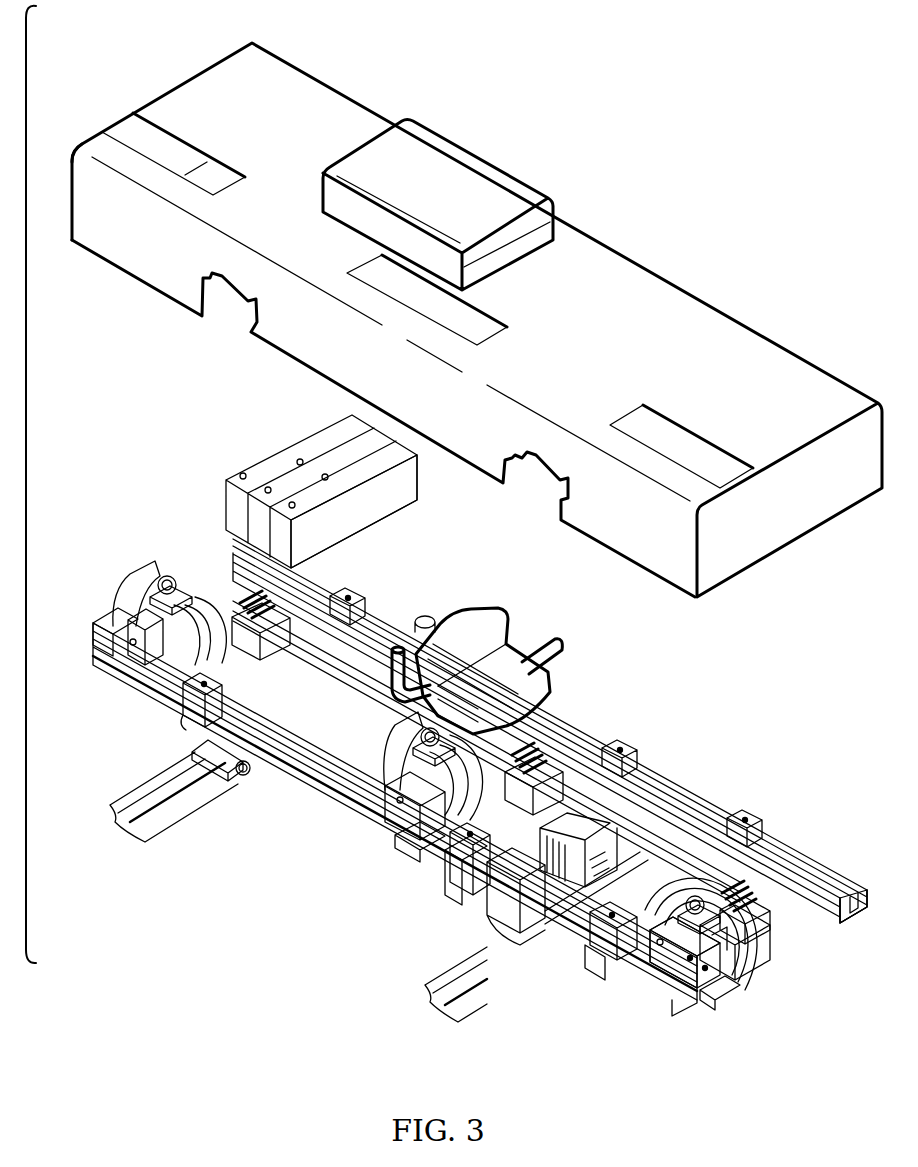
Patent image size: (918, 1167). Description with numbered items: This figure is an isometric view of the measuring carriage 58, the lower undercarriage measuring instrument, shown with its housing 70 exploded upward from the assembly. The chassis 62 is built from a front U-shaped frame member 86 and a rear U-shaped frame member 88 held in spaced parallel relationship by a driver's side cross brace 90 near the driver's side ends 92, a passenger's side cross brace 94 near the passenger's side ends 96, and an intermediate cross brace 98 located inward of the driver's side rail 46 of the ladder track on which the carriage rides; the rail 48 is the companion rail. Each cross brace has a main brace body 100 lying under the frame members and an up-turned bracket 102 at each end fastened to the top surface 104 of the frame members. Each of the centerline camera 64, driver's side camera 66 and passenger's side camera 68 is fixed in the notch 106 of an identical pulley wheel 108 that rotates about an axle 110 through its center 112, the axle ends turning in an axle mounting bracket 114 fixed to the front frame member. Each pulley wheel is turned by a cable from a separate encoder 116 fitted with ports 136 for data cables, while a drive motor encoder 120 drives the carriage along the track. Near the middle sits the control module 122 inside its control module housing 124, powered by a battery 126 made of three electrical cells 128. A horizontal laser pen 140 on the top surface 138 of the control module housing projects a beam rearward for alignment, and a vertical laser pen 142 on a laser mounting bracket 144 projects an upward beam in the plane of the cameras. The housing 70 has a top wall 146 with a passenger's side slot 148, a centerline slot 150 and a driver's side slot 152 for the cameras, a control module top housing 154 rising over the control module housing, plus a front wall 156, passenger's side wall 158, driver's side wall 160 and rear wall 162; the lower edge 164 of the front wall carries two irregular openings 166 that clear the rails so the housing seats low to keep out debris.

The driver's side rail 46 is at (430, 1003).
The rail 48 is at (115, 795).
The measuring carriage 58 is at (118, 463).
The chassis 62 is at (700, 795).
The centerline camera 64 is at (320, 775).
The driver's side camera 66 is at (727, 981).
The passenger's side camera 68 is at (448, 775).
The housing 70 is at (768, 345).
The front U-shaped frame member 86 is at (690, 990).
The rear U-shaped frame member 88 is at (675, 775).
The driver's side cross brace 90 is at (605, 985).
The driver's side ends 92 is at (858, 910).
The passenger's side cross brace 94 is at (185, 740).
The passenger's side ends 96 is at (232, 565).
The intermediate cross brace 98 is at (450, 895).
The main brace body 100 is at (490, 905).
The up-turned bracket 102 is at (355, 600).
The top surface 104 is at (255, 780).
The notch 106 is at (148, 598).
The pulley wheel 108 is at (115, 585).
The axle 110 is at (95, 635).
The center 112 is at (740, 960).
The axle mounting bracket 114 is at (120, 672).
The encoder 116 is at (303, 576).
The drive motor encoder 120 is at (598, 828).
The control module 122 is at (560, 650).
The control module housing 124 is at (425, 630).
The battery 126 is at (420, 478).
The electrical cells 128 is at (290, 468).
The ports 136 is at (250, 605).
The top surface 138 is at (471, 650).
The horizontal laser pen 140 is at (522, 660).
The vertical laser pen 142 is at (392, 672).
The laser mounting bracket 144 is at (440, 690).
The top wall 146 is at (276, 95).
The passenger's side slot 148 is at (185, 140).
The centerline slot 150 is at (473, 300).
The driver's side slot 152 is at (738, 460).
The control module top housing 154 is at (500, 190).
The front wall 156 is at (328, 371).
The passenger's side wall 158 is at (78, 145).
The driver's side wall 160 is at (789, 532).
The rear wall 162 is at (707, 303).
The lower edge 164 is at (145, 285).
The irregular openings 166 is at (250, 310).